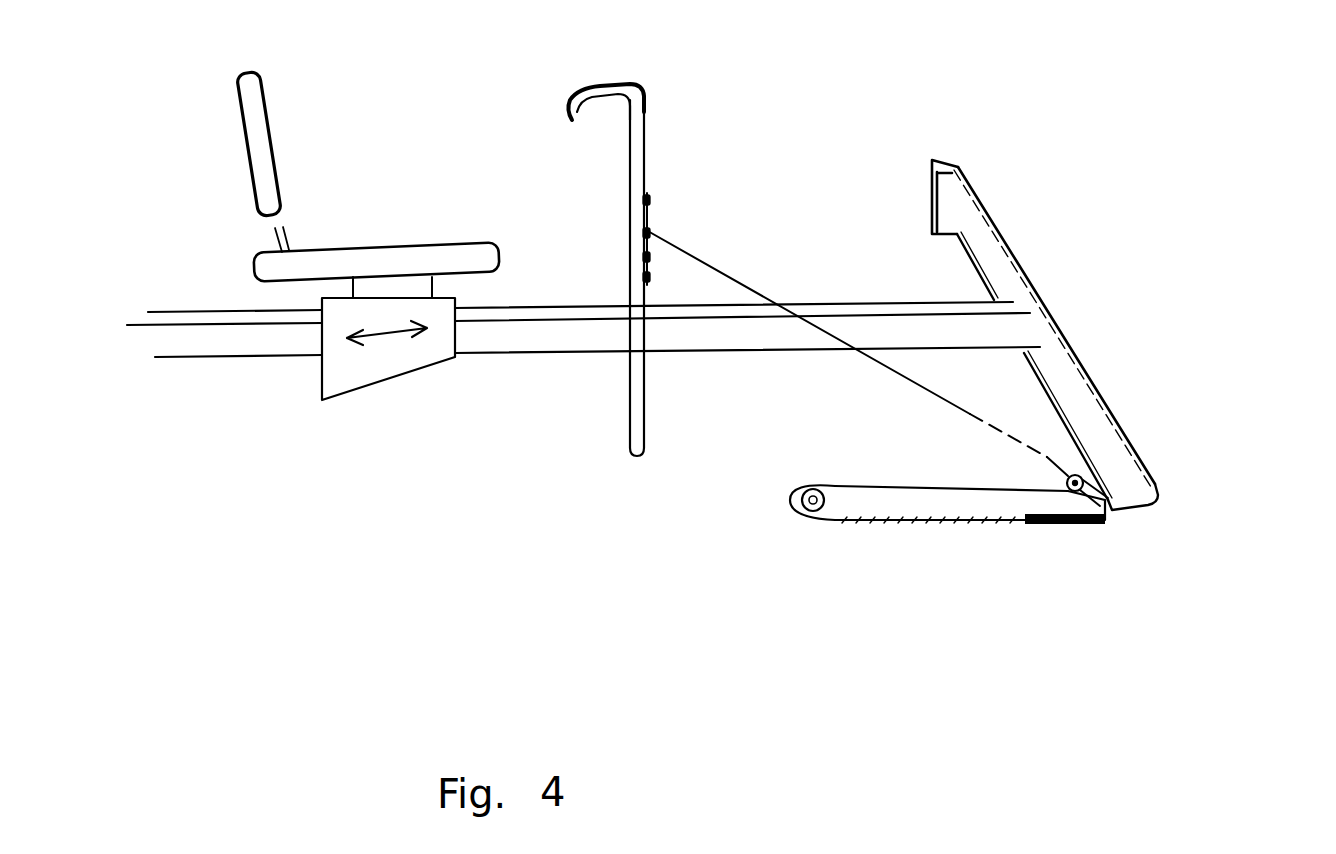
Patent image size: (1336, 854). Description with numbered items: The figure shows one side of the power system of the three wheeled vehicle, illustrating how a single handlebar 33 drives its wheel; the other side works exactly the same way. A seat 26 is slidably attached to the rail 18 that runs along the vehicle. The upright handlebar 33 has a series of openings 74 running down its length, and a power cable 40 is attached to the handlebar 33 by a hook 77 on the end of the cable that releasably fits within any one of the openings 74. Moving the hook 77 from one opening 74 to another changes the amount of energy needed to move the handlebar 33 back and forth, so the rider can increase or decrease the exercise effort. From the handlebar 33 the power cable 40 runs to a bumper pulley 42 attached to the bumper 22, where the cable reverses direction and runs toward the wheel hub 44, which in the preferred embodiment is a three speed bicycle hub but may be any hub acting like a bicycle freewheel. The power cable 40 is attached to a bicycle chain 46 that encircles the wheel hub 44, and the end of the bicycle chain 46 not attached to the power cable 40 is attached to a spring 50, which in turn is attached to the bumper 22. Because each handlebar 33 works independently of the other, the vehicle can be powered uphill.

The rail 18 is at (885, 327).
The bumper 22 is at (1082, 388).
The seat 26 is at (330, 257).
The handlebar 33 is at (636, 92).
The power cable 40 is at (870, 363).
The bumper pulley 42 is at (1127, 520).
The wheel hub 44 is at (837, 523).
The bicycle chain 46 is at (908, 523).
The spring 50 is at (1062, 537).
The openings 74 is at (645, 277).
The hook 77 is at (655, 233).